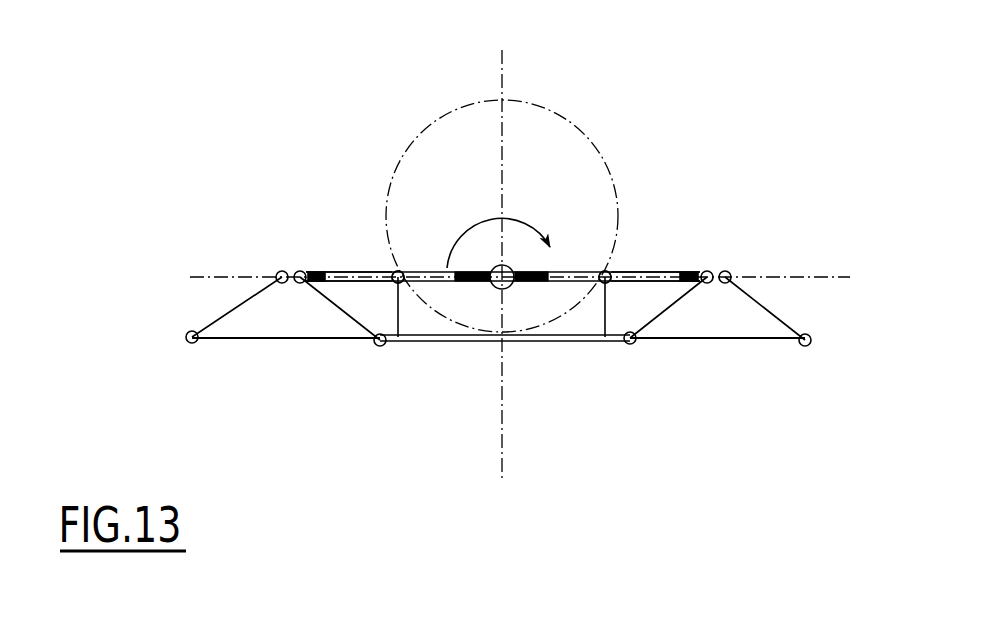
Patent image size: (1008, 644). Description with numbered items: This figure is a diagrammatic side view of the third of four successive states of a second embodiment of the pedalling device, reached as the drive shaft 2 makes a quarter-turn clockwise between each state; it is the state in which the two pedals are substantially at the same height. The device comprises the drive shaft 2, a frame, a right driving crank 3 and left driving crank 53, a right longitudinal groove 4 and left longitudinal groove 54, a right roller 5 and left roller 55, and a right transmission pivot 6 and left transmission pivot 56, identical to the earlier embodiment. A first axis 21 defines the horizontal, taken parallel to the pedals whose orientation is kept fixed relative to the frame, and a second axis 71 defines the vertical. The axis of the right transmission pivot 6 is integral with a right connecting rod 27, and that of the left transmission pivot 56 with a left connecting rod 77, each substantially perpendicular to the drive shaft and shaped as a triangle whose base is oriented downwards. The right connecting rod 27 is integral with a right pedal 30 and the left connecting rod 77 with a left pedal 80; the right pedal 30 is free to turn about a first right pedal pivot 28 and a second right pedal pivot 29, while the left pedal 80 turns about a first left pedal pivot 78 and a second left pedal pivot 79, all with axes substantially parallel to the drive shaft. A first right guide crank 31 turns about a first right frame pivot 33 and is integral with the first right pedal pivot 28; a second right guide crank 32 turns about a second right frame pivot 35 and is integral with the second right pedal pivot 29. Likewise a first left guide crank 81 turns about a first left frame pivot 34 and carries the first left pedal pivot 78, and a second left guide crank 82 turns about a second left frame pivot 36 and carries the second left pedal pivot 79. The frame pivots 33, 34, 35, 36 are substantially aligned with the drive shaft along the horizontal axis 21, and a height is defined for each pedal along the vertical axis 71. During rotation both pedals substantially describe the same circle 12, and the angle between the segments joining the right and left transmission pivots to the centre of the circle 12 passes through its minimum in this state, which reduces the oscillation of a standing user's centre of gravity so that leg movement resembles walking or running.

The drive shaft 2 is at (517, 262).
The right driving crank 3 is at (523, 288).
The right longitudinal groove 4 is at (652, 268).
The right roller 5 is at (617, 268).
The right transmission pivot 6 is at (605, 277).
The circle (curve) 12 is at (584, 132).
The first axis (horizontal axis) 21 is at (197, 268).
The right connecting rod 27 is at (613, 305).
The first right pedal pivot 28 is at (820, 344).
The second right pedal pivot 29 is at (376, 347).
The right pedal 30 is at (752, 347).
The first right guide crank 31 is at (786, 313).
The second right guide crank 32 is at (333, 312).
The first right frame pivot 33 is at (712, 265).
The first left frame pivot 34 is at (735, 270).
The second right frame pivot 35 is at (272, 268).
The second left frame pivot 36 is at (300, 265).
The left driving crank 53 is at (474, 286).
The left longitudinal groove 54 is at (372, 270).
The left roller 55 is at (405, 268).
The left transmission pivot 56 is at (398, 277).
The second axis (vertical axis) 71 is at (503, 76).
The left connecting rod 77 is at (406, 314).
The first left pedal pivot 78 is at (623, 350).
The second left pedal pivot 79 is at (178, 340).
The left pedal 80 is at (238, 343).
The first left guide crank 81 is at (693, 310).
The second left guide crank 82 is at (238, 300).